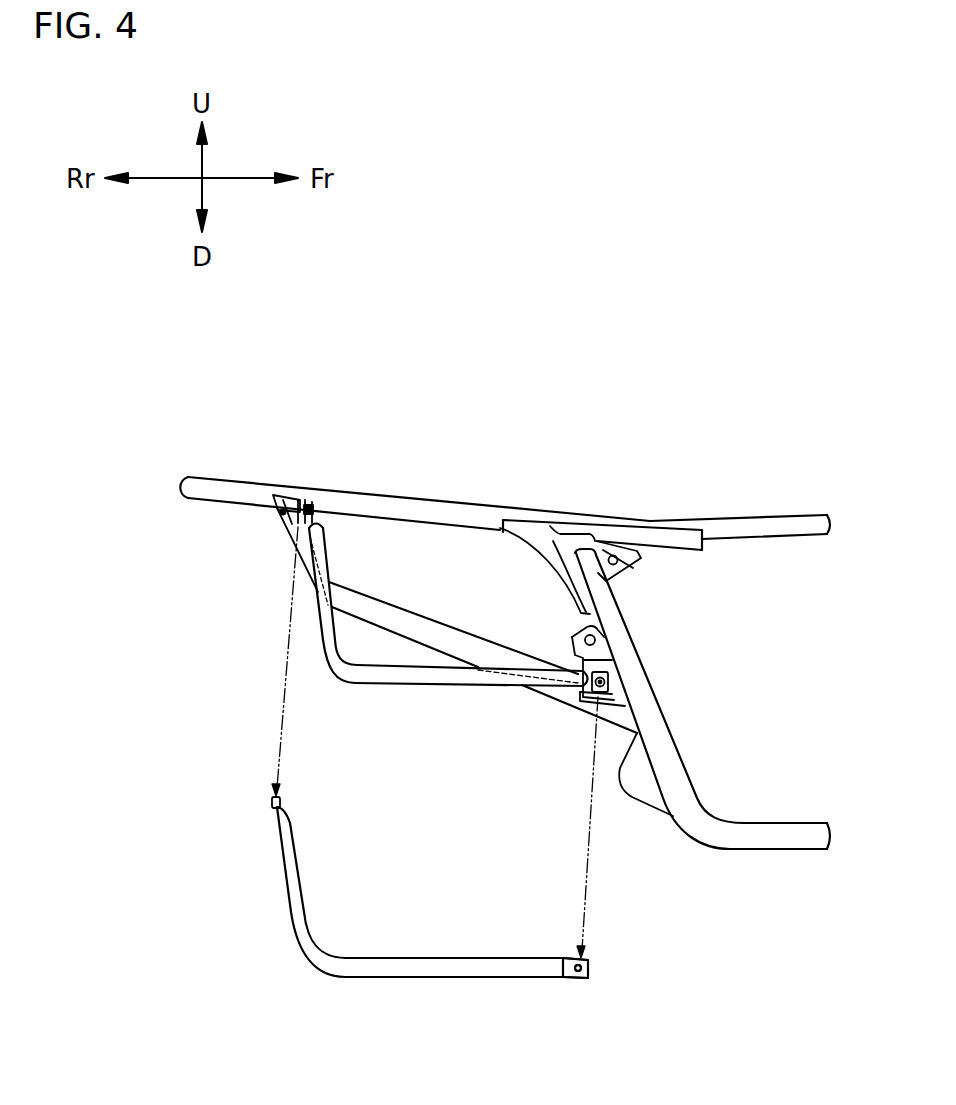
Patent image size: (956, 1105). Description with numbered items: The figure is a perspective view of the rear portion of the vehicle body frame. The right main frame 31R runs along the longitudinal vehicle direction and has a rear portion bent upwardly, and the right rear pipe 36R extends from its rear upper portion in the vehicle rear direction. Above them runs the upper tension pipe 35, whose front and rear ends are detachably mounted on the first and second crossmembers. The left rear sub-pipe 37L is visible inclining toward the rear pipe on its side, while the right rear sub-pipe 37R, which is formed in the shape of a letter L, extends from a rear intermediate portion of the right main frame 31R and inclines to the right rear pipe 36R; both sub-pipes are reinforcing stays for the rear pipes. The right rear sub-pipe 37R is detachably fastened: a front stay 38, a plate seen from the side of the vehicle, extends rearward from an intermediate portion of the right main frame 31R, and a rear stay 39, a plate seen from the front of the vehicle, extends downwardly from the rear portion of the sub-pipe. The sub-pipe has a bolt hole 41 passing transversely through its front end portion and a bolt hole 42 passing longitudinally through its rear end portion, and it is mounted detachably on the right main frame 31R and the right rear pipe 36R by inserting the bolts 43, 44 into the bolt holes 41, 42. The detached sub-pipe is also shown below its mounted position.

The right main frame 31R is at (667, 773).
The upper tension pipe 35 is at (760, 525).
The right rear pipe 36R is at (407, 510).
The left rear sub-pipe 37L is at (427, 633).
The right rear sub-pipe 37R is at (418, 677).
The front stay 38 is at (587, 695).
The rear stay 39 is at (287, 497).
The bolt hole 41 is at (578, 980).
The bolt hole 42 is at (278, 808).
The bolt 43 is at (602, 683).
The bolt 44 is at (307, 510).